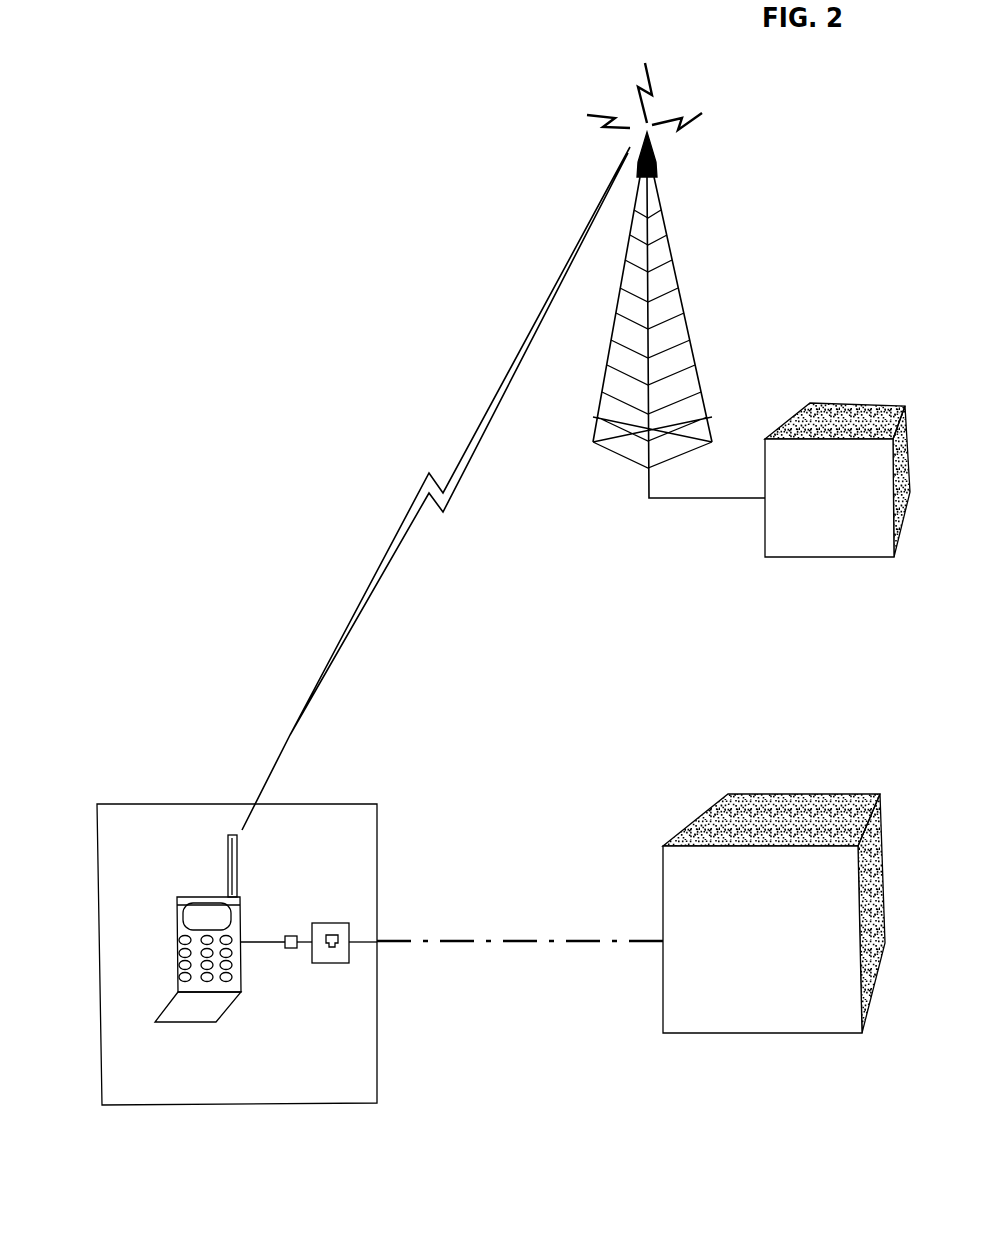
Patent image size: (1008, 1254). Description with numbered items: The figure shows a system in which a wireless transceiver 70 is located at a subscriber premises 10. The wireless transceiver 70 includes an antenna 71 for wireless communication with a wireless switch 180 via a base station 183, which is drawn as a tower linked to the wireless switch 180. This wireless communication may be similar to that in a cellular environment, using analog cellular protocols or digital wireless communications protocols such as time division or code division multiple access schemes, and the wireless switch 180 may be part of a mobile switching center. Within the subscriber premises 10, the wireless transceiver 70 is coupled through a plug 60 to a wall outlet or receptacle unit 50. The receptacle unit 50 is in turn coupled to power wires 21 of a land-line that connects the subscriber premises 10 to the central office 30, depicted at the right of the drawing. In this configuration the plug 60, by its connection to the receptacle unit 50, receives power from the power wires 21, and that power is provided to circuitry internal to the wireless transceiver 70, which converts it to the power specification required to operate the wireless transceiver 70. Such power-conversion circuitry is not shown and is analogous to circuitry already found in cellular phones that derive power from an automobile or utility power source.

The subscriber premises 10 is at (107, 960).
The power wires 21 is at (620, 939).
The central office 30 is at (700, 828).
The receptacle unit 50 is at (332, 923).
The plug 60 is at (293, 953).
The wireless transceiver 70 is at (175, 930).
The antenna 71 is at (227, 870).
The wireless switch 180 is at (797, 559).
The base station 183 is at (680, 287).